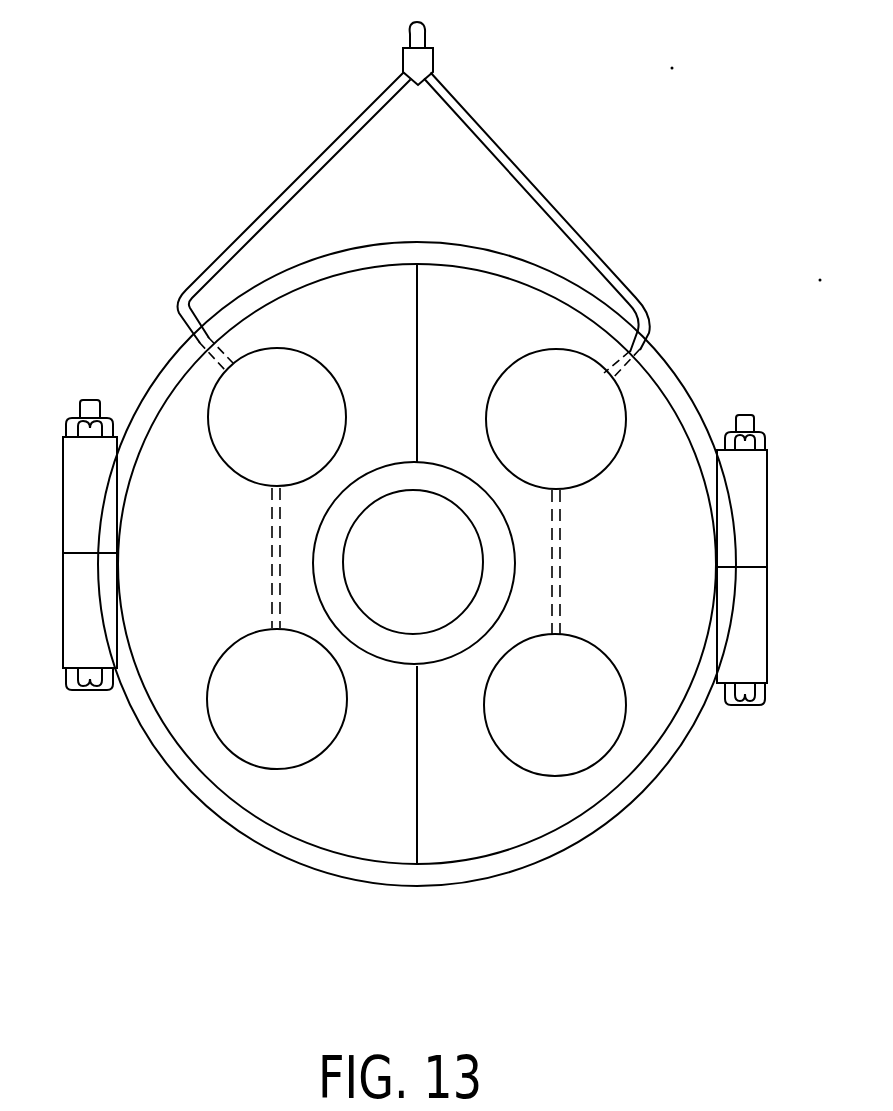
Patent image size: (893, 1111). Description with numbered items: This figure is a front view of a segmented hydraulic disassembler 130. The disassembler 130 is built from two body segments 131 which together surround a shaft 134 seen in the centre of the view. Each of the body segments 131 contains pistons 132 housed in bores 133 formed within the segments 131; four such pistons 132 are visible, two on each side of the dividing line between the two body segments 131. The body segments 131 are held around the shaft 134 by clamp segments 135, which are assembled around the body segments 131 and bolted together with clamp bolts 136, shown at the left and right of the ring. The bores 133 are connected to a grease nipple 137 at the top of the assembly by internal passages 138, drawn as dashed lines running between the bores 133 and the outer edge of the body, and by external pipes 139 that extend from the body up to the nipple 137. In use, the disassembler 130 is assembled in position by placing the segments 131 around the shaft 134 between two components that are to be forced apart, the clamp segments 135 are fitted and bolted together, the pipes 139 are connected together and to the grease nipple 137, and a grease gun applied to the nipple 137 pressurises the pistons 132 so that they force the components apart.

The segmented disassembler 130 is at (602, 851).
The body segments 131 is at (411, 565).
The pistons 132 is at (393, 562).
The bores 133 is at (232, 469).
The shaft 134 is at (414, 563).
The clamp segments 135 is at (152, 372).
The clamp bolts 136 is at (100, 692).
The grease nipple 137 is at (440, 30).
The internal passages 138 is at (236, 347).
The external pipes 139 is at (566, 221).